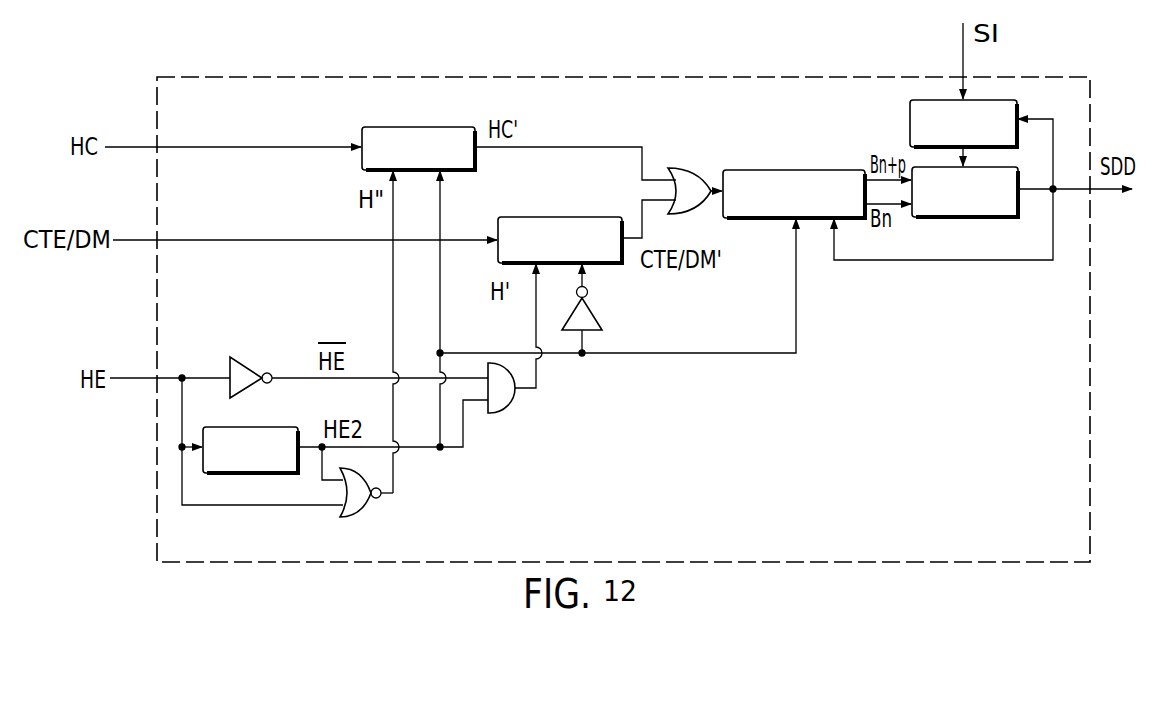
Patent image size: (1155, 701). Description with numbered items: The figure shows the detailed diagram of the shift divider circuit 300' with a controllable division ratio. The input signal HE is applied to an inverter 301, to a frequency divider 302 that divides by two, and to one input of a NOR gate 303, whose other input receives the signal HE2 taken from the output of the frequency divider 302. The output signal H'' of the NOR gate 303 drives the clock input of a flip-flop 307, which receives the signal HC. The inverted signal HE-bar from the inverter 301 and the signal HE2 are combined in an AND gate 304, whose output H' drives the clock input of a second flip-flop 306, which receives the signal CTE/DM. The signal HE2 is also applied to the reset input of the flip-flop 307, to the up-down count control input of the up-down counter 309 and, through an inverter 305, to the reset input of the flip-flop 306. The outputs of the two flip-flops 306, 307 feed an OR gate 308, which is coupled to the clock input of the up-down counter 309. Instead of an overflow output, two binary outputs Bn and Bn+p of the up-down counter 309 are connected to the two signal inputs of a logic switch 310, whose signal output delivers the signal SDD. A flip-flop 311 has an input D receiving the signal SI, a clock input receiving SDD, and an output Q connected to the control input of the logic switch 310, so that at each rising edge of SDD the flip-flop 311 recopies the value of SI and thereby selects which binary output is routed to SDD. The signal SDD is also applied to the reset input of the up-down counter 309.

The divider circuit with shift 300' is at (623, 284).
The inverter 301 is at (229, 370).
The frequency divider 302 is at (247, 427).
The NOR gate 303 is at (365, 512).
The AND gate 304 is at (508, 408).
The inverter 305 is at (597, 316).
The flip-flop 306 is at (569, 217).
The flip-flop 307 is at (416, 127).
The OR gate 308 is at (690, 170).
The up-down counter 309 is at (800, 170).
The logic switch 310 is at (966, 217).
The flip-flop 311 is at (1004, 100).